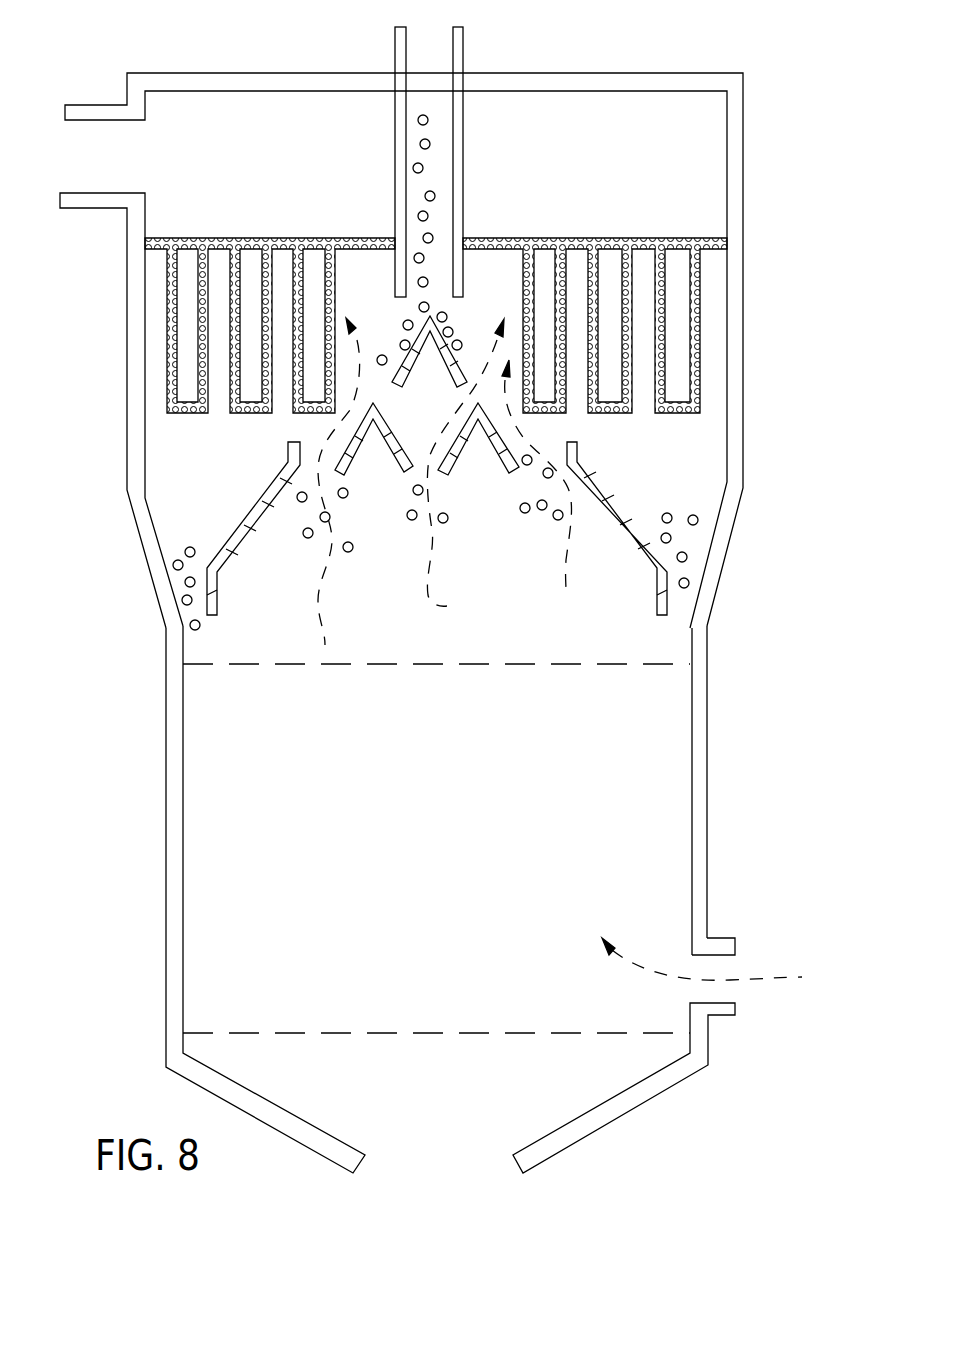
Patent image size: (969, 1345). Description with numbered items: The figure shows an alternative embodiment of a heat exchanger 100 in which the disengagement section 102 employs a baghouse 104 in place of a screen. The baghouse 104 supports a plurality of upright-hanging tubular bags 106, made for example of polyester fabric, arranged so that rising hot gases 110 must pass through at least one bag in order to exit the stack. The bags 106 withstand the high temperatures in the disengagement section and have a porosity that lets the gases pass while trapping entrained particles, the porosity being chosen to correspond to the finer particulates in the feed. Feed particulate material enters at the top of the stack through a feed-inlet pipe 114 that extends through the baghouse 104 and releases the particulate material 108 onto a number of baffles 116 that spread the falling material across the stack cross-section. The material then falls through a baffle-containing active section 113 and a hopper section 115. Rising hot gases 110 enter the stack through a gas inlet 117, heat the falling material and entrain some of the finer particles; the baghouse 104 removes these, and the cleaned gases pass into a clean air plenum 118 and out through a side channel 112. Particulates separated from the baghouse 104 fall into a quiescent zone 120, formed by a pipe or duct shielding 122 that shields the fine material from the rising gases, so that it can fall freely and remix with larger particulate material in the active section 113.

The heat exchanger 100 is at (796, 358).
The disengagement section 102 is at (697, 702).
The baghouse 104 is at (665, 208).
The tubular bags 106 is at (190, 240).
The particulate material 108 is at (437, 262).
The rising hot gases 110 is at (322, 603).
The side channel 112 is at (91, 140).
The active section 113 is at (453, 877).
The feed-inlet pipe 114 is at (462, 157).
The hopper section 115 is at (463, 1122).
The baffles 116 is at (443, 405).
The gas inlet 117 is at (720, 944).
The clean air plenum 118 is at (285, 130).
The quiescent zone 120 is at (223, 499).
The shielding 122 is at (246, 540).